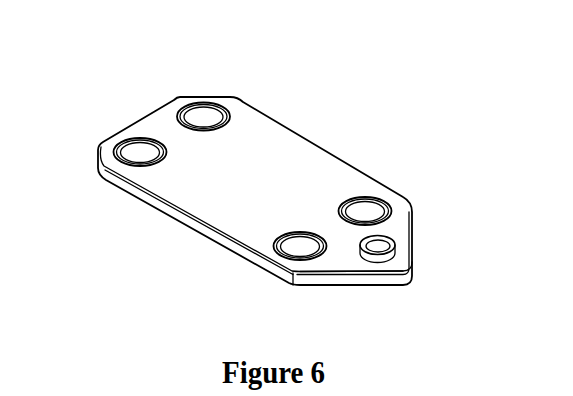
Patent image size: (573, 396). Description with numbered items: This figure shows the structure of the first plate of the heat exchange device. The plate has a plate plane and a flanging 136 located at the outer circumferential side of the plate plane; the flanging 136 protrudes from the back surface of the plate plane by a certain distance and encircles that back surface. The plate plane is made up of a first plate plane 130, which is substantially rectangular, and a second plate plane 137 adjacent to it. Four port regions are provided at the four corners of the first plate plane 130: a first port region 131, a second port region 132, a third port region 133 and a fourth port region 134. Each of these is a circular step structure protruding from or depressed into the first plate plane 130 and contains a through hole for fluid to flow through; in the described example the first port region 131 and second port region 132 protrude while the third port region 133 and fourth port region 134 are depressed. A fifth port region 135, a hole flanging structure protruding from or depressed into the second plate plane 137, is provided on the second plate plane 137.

The first plate plane 130 is at (228, 186).
The first port region 131 is at (202, 116).
The second port region 132 is at (367, 210).
The third port region 133 is at (300, 246).
The fourth port region 134 is at (140, 151).
The fifth port region 135 is at (378, 247).
The flanging 136 is at (317, 281).
The second plate plane 137 is at (342, 258).